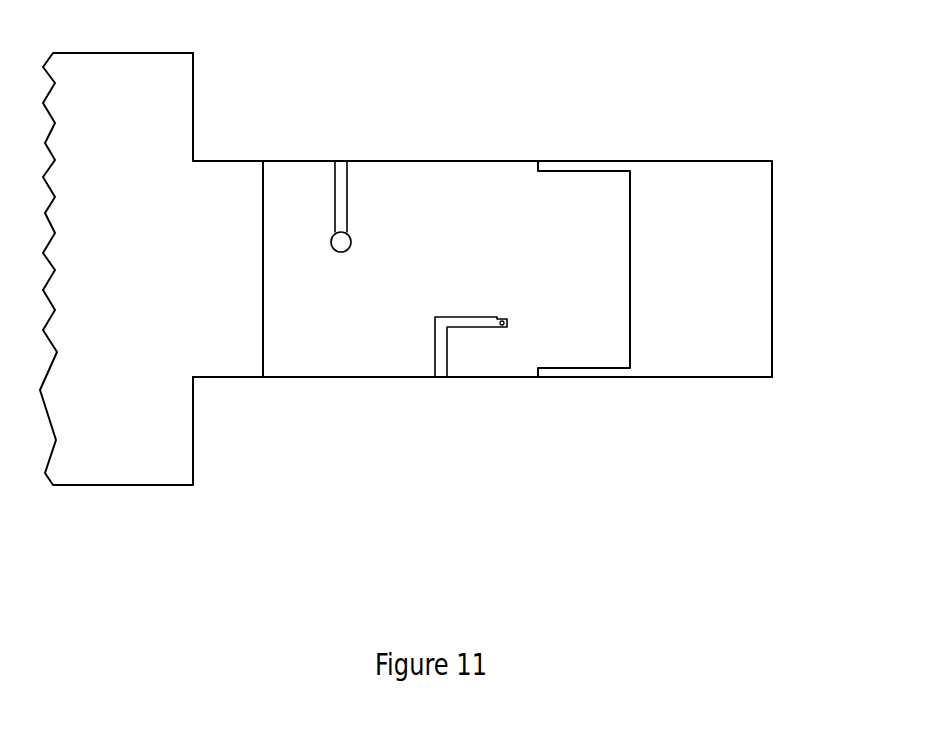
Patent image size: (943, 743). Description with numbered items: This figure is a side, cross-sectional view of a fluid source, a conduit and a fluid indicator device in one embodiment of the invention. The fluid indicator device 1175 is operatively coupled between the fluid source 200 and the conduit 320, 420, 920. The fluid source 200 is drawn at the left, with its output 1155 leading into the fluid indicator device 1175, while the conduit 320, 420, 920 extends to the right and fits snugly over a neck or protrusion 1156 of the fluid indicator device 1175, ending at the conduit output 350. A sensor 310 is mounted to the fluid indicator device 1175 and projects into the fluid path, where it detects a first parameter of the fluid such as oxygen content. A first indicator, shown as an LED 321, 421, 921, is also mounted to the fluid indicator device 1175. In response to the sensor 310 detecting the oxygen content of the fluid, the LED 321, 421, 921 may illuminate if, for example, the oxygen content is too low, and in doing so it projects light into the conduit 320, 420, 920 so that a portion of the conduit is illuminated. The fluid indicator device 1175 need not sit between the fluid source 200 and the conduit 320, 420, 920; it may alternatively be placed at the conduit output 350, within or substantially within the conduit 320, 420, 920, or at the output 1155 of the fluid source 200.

The fluid source 200 is at (132, 486).
The output of the fluid source 1155 is at (227, 207).
The fluid indicator device 1175 is at (330, 377).
The conduit 320 is at (486, 240).
The conduit 420 is at (486, 240).
The conduit 920 is at (663, 161).
The conduit output 350 is at (772, 282).
The neck or protrusion 1156 is at (550, 222).
The sensor 310 is at (351, 238).
The LED 321 is at (522, 377).
The LED 421 is at (522, 377).
The LED 921 is at (470, 328).